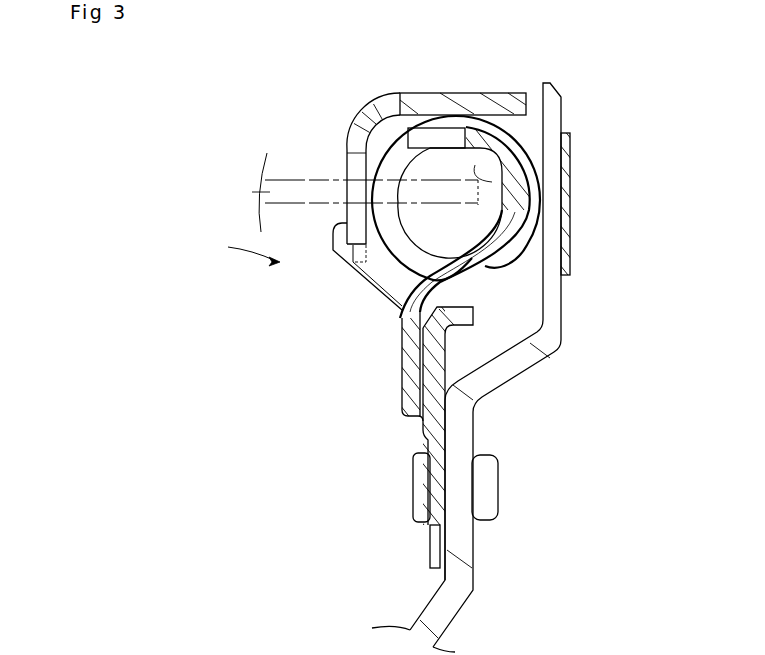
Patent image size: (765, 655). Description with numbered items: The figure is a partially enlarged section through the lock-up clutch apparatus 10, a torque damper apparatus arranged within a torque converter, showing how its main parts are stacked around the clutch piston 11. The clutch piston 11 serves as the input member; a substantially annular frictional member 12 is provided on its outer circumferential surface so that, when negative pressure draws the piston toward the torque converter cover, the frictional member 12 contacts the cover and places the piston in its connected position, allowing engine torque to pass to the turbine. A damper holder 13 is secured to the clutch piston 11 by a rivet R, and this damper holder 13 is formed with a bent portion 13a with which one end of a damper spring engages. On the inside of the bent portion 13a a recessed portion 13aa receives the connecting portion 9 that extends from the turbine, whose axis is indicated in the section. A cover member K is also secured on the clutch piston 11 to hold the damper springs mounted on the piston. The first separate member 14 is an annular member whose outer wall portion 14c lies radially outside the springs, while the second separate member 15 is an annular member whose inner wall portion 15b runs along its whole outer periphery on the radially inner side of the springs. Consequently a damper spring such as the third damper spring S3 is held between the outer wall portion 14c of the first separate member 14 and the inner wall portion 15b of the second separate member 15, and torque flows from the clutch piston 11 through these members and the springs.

The first separate member 14 is at (350, 128).
The outer wall portion 14c is at (478, 105).
The connecting portion 9 is at (255, 192).
The lock-up clutch apparatus 10 is at (240, 250).
The cover member K is at (353, 270).
The damper holder 13 is at (402, 330).
The bent portion 13a is at (520, 178).
The recessed portion 13aa is at (495, 158).
The frictional member 12 is at (570, 218).
The third damper spring S3 is at (566, 270).
The second separate member 15 is at (430, 367).
The inner wall portion 15b is at (473, 313).
The rivets R is at (415, 497).
The clutch piston 11 is at (463, 532).